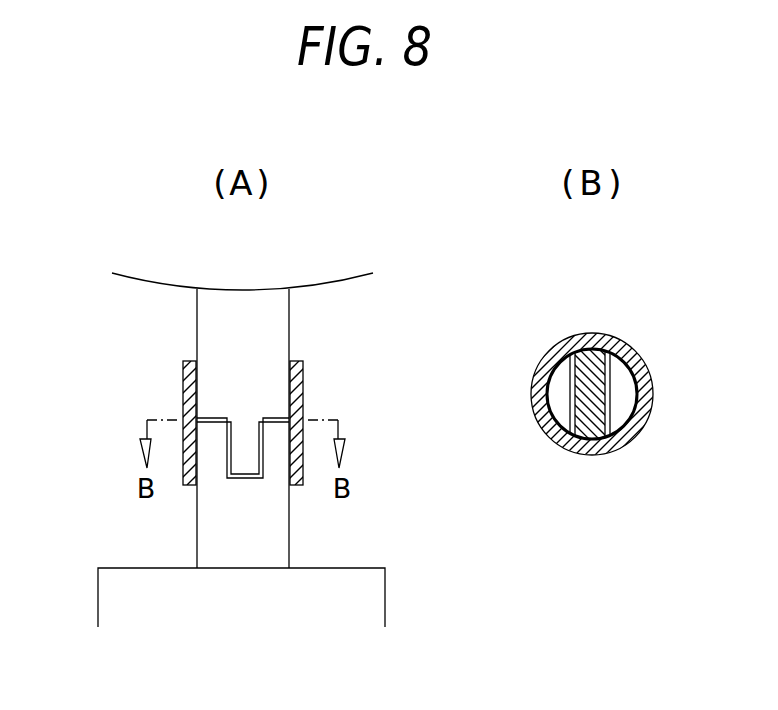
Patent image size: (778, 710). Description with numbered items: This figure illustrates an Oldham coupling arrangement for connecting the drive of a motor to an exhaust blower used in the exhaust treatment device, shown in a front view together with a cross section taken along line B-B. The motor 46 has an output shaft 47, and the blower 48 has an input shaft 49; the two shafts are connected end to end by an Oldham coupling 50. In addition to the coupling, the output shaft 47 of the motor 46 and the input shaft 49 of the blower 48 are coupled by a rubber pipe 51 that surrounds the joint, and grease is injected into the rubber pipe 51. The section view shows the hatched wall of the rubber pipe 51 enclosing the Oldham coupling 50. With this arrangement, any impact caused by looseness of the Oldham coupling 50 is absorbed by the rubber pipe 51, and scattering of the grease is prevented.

The motor 46 is at (345, 606).
The output shaft 47 is at (257, 555).
The blower 48 is at (305, 277).
The input shaft 49 is at (268, 327).
The Oldham coupling 50 is at (268, 462).
The rubber pipe 51 is at (300, 391).